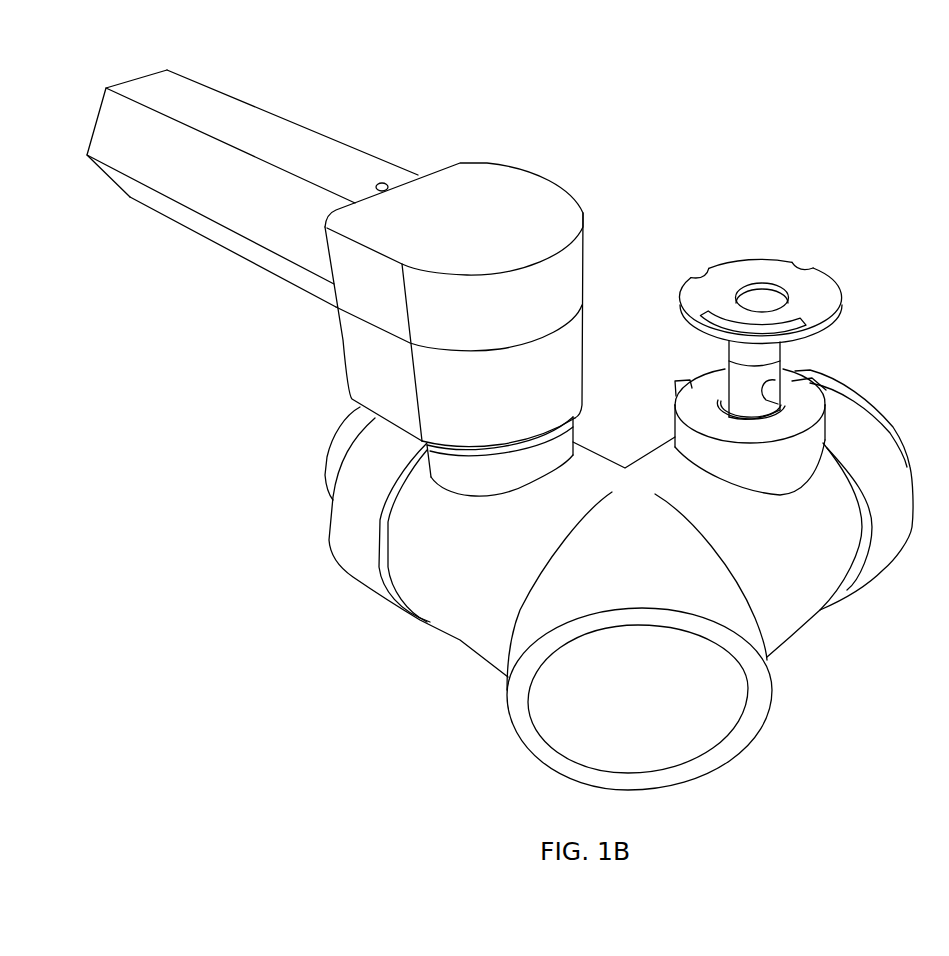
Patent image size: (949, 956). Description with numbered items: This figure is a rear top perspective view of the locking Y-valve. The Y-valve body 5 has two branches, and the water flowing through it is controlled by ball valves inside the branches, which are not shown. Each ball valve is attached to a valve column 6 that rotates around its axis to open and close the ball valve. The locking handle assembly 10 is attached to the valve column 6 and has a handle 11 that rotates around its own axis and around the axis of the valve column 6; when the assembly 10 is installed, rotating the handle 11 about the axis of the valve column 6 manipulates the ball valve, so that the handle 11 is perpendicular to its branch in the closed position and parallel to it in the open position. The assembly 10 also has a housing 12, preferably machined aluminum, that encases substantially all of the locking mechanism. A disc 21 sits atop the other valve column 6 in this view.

The locking handle assembly 10 is at (173, 43).
The handle 11 is at (207, 241).
The housing 12 is at (585, 328).
The Y-valve body 5 is at (507, 683).
The valve column 6 is at (781, 362).
The stem cap disc 21 is at (833, 297).